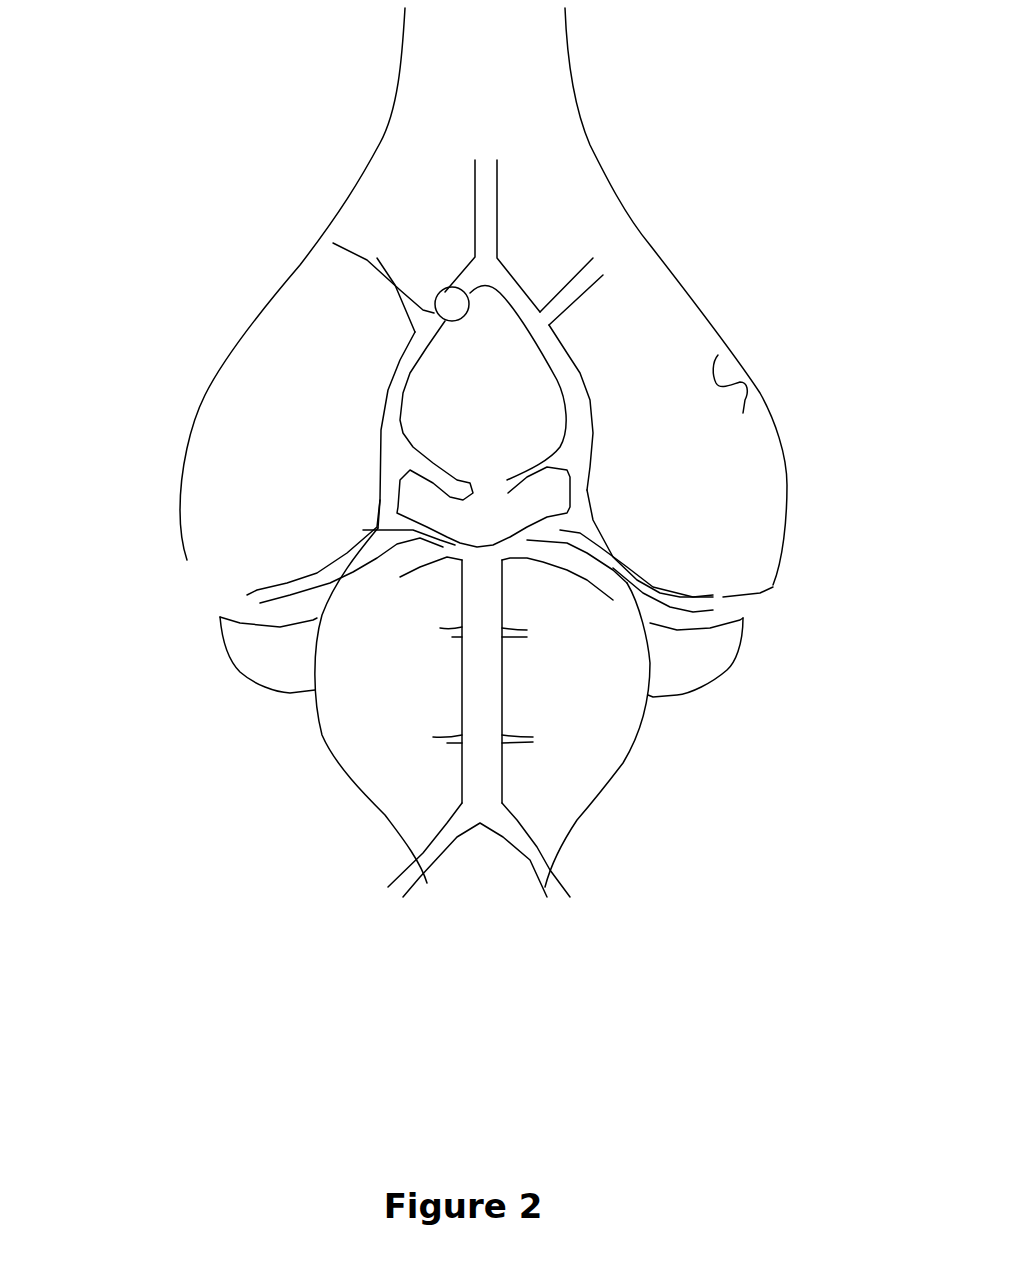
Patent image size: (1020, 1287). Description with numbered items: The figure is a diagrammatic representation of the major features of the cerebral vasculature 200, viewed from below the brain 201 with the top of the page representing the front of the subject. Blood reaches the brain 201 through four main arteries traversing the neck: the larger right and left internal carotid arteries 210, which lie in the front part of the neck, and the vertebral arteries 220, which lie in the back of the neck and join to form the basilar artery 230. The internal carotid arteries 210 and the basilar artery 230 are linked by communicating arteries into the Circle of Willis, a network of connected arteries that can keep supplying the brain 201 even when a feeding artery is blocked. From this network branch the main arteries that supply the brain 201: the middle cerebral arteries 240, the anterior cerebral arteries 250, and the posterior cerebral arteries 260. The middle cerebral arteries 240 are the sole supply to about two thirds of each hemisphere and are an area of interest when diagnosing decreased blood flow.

The cerebral vasculature 200 is at (683, 57).
The brain 201 is at (200, 347).
The internal carotid arteries 210 is at (462, 321).
The vertebral arteries 220 is at (482, 883).
The basilar artery 230 is at (512, 702).
The middle cerebral arteries 240 is at (660, 228).
The anterior cerebral arteries 250 is at (477, 160).
The posterior cerebral arteries 260 is at (810, 542).